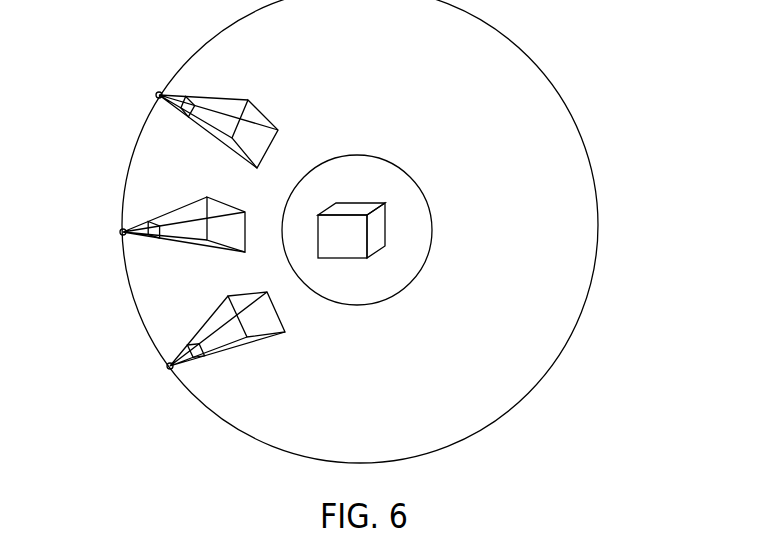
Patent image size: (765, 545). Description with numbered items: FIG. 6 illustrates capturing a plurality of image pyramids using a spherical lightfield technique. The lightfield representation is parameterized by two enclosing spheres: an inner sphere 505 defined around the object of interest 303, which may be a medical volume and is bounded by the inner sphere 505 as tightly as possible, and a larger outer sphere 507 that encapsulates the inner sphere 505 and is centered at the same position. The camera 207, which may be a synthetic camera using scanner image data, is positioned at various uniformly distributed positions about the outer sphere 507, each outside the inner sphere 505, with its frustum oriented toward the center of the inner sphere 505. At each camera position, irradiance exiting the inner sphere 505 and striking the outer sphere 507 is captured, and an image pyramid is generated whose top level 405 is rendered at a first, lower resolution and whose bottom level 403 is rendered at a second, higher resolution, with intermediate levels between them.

The camera 207 is at (110, 229).
The object of interest 303 is at (392, 215).
The bottom level 403 is at (219, 113).
The top level 405 is at (195, 97).
The inner sphere 505 is at (435, 242).
The outer sphere 507 is at (600, 238).